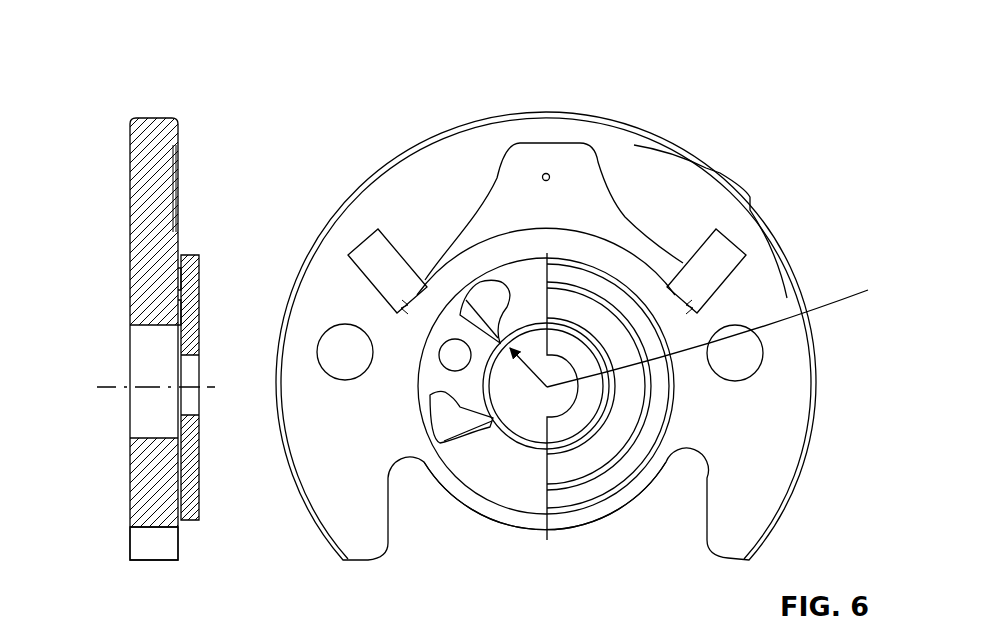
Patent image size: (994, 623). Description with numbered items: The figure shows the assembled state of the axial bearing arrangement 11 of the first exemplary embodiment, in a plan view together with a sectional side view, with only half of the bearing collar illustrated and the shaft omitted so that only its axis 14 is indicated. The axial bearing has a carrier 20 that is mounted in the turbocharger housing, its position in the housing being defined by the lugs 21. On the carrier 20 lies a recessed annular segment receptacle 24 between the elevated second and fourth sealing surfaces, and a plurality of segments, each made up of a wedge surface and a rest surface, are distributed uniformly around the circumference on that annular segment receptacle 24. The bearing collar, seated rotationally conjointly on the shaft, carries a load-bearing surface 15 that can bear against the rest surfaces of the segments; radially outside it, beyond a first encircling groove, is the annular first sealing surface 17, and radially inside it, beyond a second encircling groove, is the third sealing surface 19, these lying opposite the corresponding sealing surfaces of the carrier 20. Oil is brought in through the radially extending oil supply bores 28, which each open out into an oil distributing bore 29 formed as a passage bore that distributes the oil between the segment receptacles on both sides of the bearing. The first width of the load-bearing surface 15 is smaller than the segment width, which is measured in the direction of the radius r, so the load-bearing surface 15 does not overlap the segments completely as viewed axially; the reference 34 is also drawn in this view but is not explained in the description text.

The axial bearing arrangement 11 is at (124, 575).
The axis 14 is at (110, 398).
The load-bearing surface 15 is at (563, 473).
The first sealing surface 17 is at (547, 515).
The third sealing surface 19 is at (600, 440).
The carrier 20 is at (666, 173).
The lugs 21 is at (305, 228).
The annular segment receptacle 24 is at (487, 490).
The oil supply bores 28 is at (404, 296).
The oil distributing bores 29 is at (451, 342).
The radial line 34 is at (724, 330).
The radius r is at (546, 354).